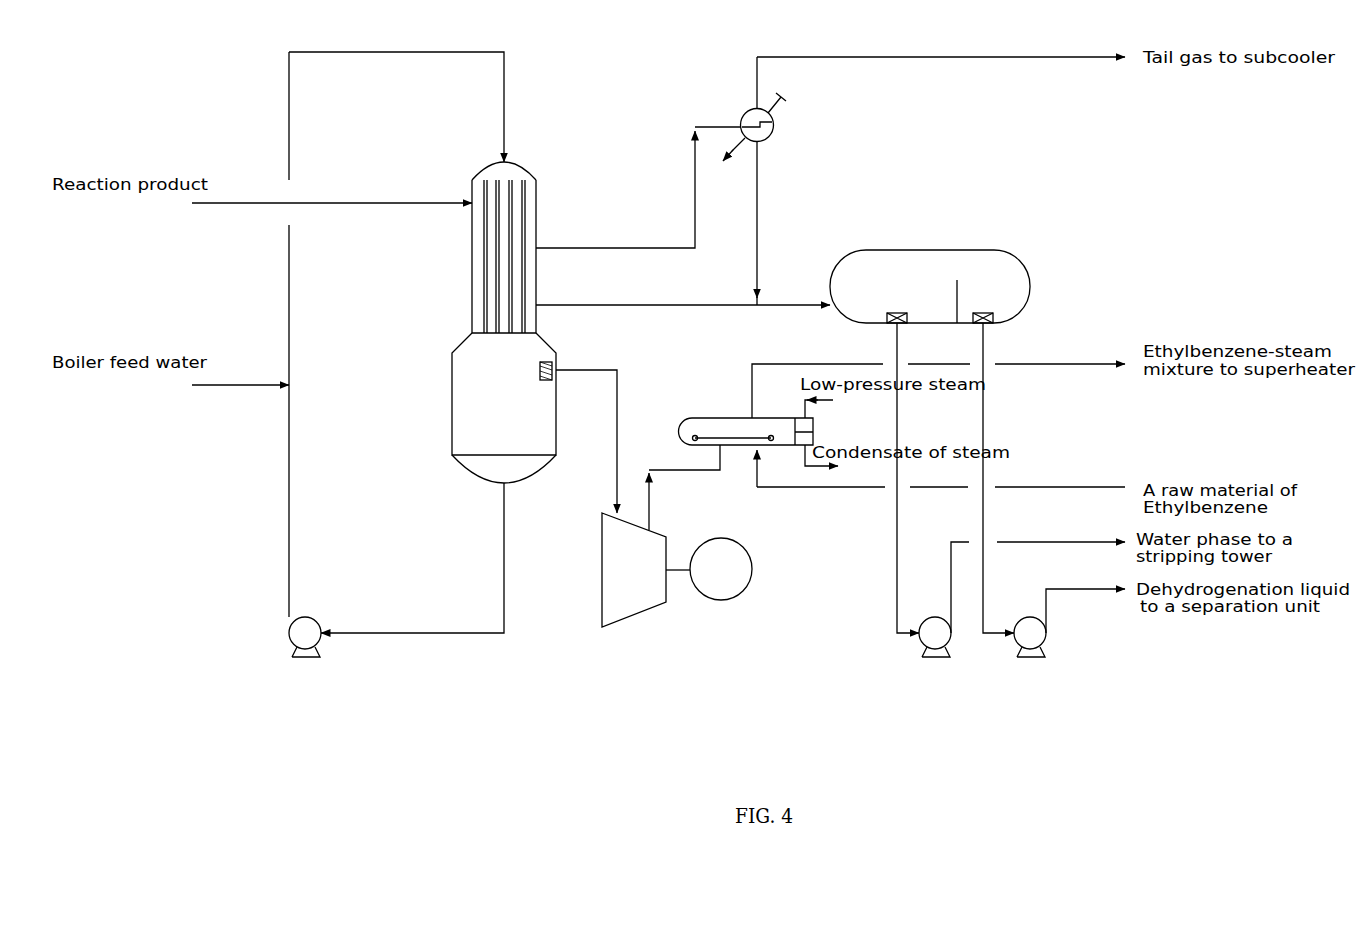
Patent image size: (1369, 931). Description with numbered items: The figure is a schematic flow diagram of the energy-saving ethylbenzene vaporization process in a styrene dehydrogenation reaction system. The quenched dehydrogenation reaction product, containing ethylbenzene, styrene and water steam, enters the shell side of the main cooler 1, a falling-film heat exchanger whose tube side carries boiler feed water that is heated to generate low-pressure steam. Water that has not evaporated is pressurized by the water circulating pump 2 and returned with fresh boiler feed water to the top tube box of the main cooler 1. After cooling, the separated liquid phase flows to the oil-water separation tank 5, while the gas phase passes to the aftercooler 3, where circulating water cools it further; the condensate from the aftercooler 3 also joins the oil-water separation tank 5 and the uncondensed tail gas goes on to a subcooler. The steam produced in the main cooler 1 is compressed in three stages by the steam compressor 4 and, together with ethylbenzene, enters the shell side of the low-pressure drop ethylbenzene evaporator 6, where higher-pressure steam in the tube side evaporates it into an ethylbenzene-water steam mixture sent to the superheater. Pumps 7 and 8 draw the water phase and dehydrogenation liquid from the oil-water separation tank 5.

The main cooler 1 is at (490, 432).
The water circulating pump 2 is at (298, 660).
The aftercooler 3 is at (747, 110).
The steam compressor 4 is at (623, 587).
The oil-water separation tank 5 is at (867, 278).
The low-pressure drop ethylbenzene evaporator 6 is at (707, 427).
The water phase pump 7 is at (928, 660).
The dehydrogenation liquid pump 8 is at (1020, 660).